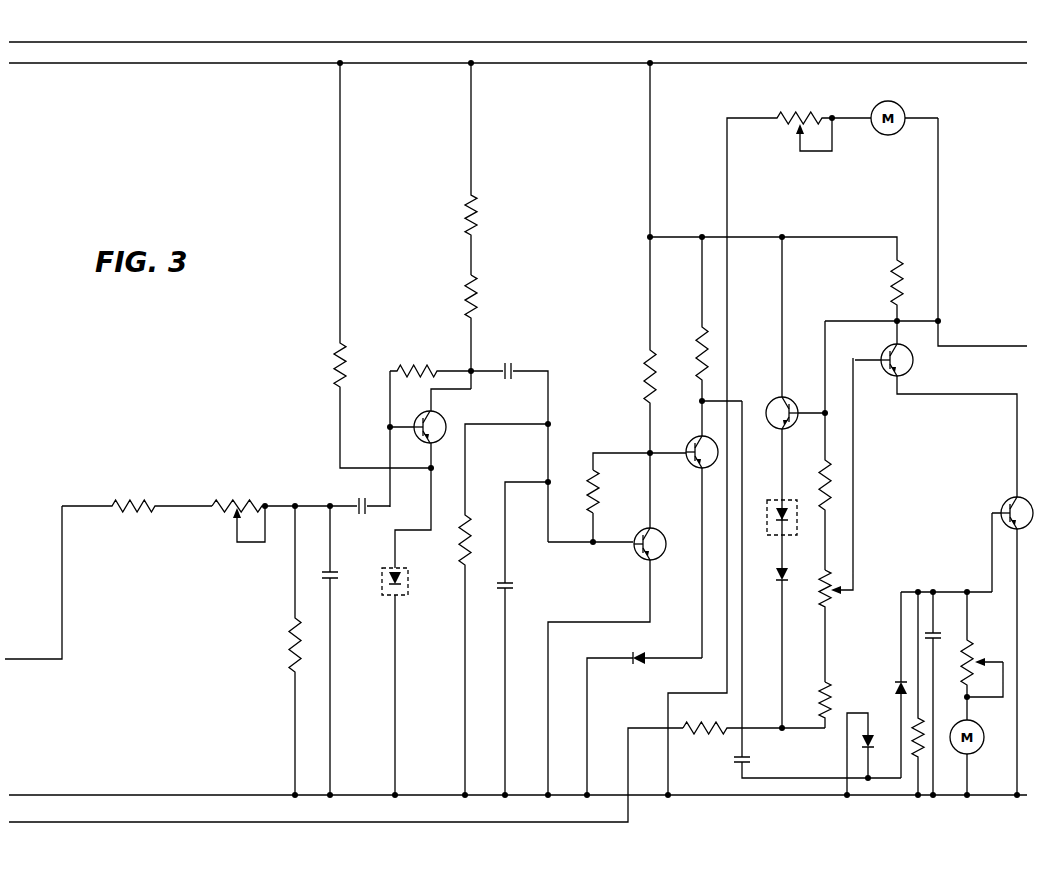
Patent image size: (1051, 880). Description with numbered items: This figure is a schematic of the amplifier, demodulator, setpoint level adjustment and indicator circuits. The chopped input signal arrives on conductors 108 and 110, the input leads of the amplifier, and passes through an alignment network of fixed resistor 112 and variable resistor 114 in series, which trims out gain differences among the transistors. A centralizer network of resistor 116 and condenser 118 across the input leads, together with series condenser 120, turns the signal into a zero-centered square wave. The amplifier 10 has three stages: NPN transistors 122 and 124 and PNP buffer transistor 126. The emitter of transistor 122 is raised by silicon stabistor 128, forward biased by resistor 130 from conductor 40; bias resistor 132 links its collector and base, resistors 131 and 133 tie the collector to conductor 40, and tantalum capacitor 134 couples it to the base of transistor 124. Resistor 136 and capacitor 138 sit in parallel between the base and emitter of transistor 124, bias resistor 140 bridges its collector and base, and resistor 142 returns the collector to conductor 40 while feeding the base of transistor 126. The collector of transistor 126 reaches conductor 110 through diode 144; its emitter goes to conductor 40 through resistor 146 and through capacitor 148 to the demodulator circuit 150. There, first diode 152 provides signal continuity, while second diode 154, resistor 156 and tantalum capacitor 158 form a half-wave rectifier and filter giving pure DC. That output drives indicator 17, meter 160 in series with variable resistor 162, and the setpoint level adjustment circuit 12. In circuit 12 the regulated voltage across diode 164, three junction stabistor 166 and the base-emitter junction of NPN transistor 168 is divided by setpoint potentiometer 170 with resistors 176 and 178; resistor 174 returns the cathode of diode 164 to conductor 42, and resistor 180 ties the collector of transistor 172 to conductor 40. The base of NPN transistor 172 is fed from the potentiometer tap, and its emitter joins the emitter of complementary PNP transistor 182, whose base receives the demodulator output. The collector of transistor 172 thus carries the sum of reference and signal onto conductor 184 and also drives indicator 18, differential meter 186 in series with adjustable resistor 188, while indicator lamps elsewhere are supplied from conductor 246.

The conductor 246 is at (199, 42).
The conductor 40 is at (165, 63).
The conductor 42 is at (42, 822).
The conductor 108 is at (47, 660).
The conductor 110 is at (42, 795).
The fixed resistor 112 is at (125, 508).
The variable resistor 114 is at (219, 508).
The resistor 116 is at (294, 645).
The condenser 118 is at (336, 580).
The series condenser 120 is at (360, 496).
The NPN transistor 122 is at (444, 423).
The NPN transistor 124 is at (658, 558).
The PNP transistor 126 is at (688, 440).
The silicon stabistor 128 is at (405, 587).
The resistor 130 is at (340, 352).
The resistor 131 is at (477, 228).
The bias resistor 132 is at (420, 363).
The resistor 133 is at (477, 296).
The capacitor 134 is at (510, 365).
The resistor 136 is at (458, 545).
The capacitor 138 is at (510, 585).
The bias resistor 140 is at (597, 507).
The resistor 142 is at (642, 373).
The diode 144 is at (640, 665).
The resistor 146 is at (698, 335).
The capacitor 148 is at (745, 767).
The demodulator circuit 150 is at (883, 658).
The first diode 152 is at (872, 734).
The second diode 154 is at (895, 686).
The resistor 156 is at (915, 755).
The capacitor 158 is at (937, 632).
The meter 160 is at (985, 741).
The variable resistor 162 is at (975, 652).
The diode 164 is at (777, 568).
The three junction stabistor 166 is at (768, 500).
The NPN transistor 168 is at (768, 398).
The setpoint potentiometer 170 is at (833, 584).
The NPN transistor 172 is at (914, 363).
The resistor 174 is at (714, 732).
The resistor 176 is at (840, 494).
The resistor 178 is at (822, 695).
The resistor 180 is at (890, 287).
The PNP transistor 182 is at (998, 500).
The conductor 184 is at (953, 345).
The differential meter 186 is at (893, 136).
The adjustable resistor 188 is at (800, 112).
The amplifier 10 is at (612, 429).
The setpoint level adjustment circuit 12 is at (931, 423).
The indicator 17 is at (1001, 778).
The indicator 18 is at (849, 193).